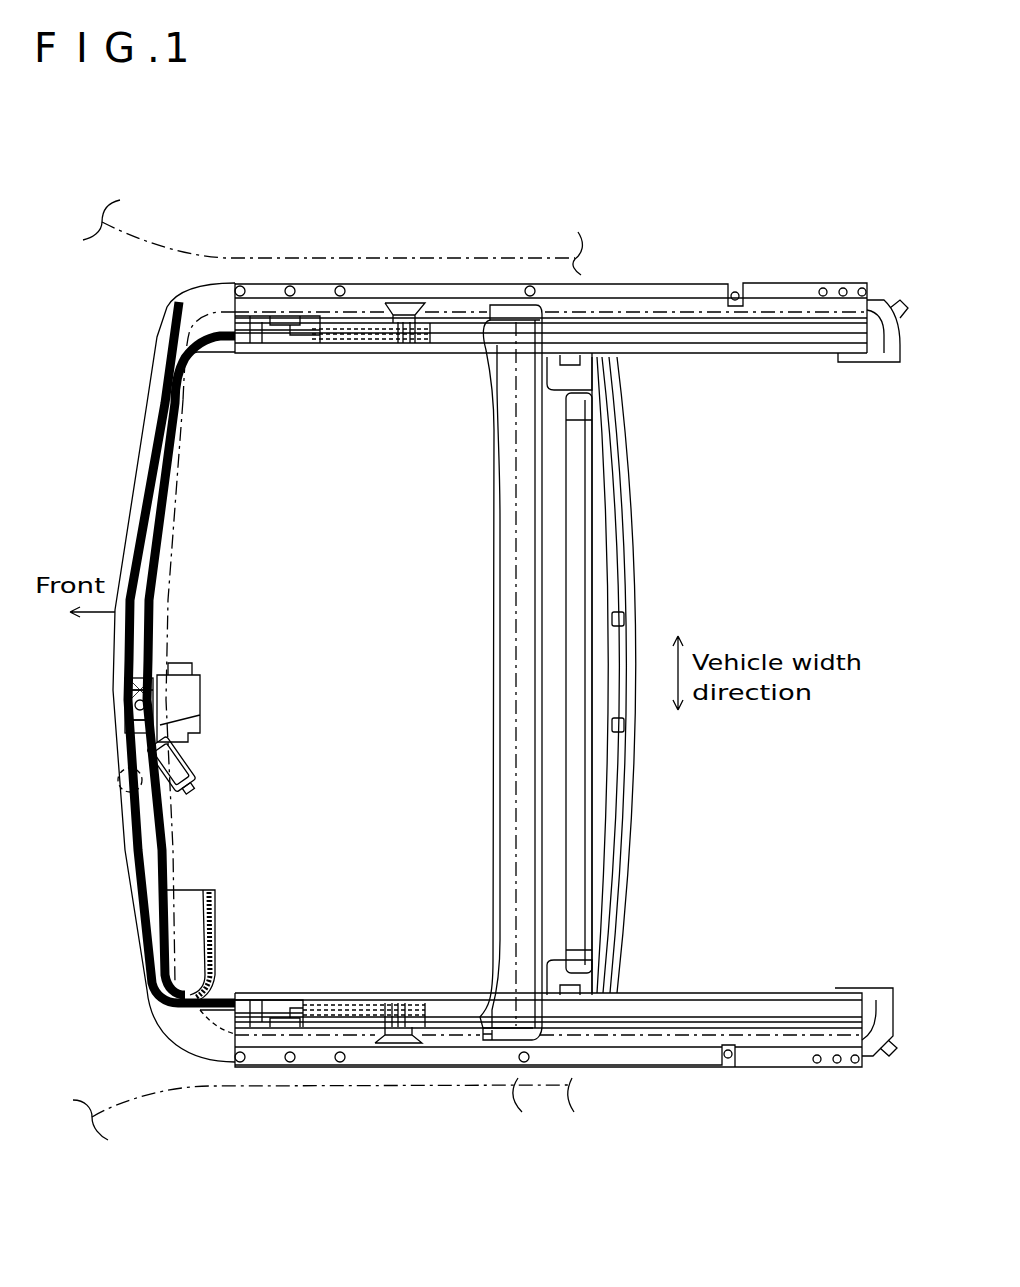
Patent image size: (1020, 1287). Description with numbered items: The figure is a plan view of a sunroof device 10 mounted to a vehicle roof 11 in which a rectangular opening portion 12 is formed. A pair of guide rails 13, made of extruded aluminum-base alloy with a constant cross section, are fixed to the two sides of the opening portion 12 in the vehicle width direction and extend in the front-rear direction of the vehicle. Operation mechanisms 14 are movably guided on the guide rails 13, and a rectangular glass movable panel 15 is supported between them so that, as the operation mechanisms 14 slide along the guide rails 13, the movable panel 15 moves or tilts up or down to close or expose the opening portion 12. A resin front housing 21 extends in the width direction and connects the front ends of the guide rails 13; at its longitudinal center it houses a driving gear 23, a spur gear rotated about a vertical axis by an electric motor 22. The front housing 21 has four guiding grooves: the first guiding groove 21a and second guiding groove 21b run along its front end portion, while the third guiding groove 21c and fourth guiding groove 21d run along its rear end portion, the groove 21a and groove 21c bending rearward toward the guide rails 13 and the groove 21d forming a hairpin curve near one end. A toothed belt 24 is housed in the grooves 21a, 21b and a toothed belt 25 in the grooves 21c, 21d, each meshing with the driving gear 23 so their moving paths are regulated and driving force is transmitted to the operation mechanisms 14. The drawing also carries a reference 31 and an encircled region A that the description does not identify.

The sunroof device 10 is at (712, 596).
The roof 11 is at (327, 670).
The opening portion 12 is at (360, 671).
The guide rails 13 is at (775, 355).
The operation mechanisms 14 is at (447, 308).
The movable panel 15 is at (520, 474).
The front housing 21 is at (150, 652).
The first guiding groove 21a is at (135, 870).
The second guiding groove 21b is at (150, 488).
The third guiding groove 21c is at (168, 512).
The fourth guiding groove 21d is at (165, 846).
The electric motor 22 is at (186, 769).
The driving gear 23 is at (126, 684).
The toothed belt 24 is at (126, 722).
The toothed belt 25 is at (170, 702).
The frame 31 is at (160, 1021).
The region A is at (125, 792).